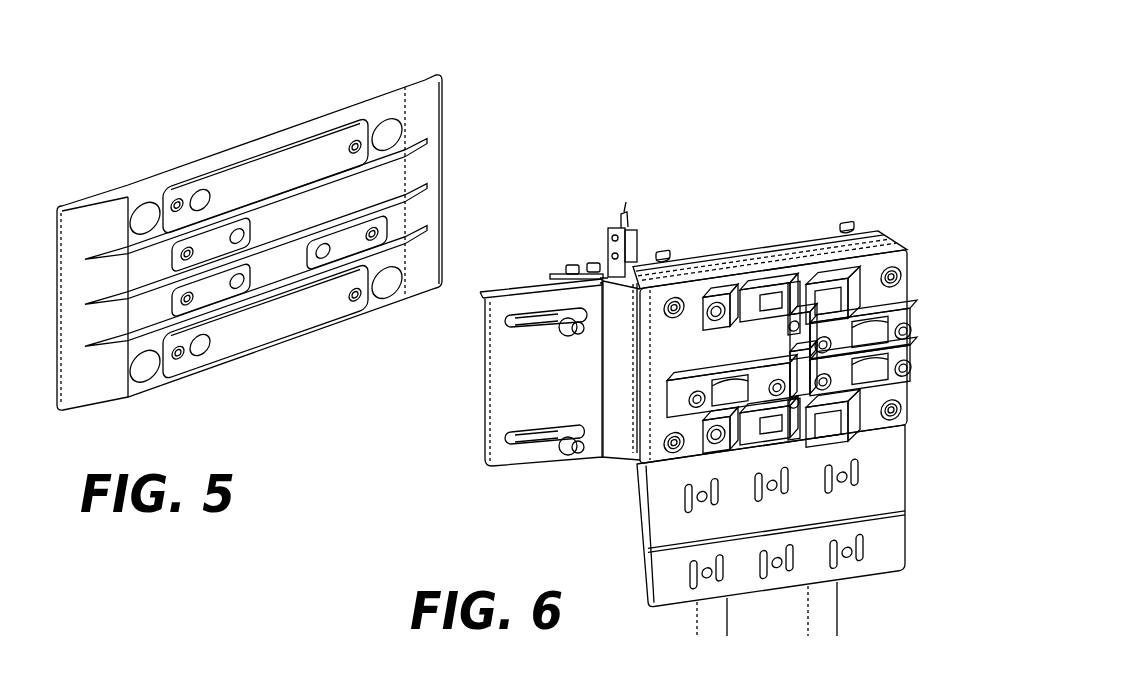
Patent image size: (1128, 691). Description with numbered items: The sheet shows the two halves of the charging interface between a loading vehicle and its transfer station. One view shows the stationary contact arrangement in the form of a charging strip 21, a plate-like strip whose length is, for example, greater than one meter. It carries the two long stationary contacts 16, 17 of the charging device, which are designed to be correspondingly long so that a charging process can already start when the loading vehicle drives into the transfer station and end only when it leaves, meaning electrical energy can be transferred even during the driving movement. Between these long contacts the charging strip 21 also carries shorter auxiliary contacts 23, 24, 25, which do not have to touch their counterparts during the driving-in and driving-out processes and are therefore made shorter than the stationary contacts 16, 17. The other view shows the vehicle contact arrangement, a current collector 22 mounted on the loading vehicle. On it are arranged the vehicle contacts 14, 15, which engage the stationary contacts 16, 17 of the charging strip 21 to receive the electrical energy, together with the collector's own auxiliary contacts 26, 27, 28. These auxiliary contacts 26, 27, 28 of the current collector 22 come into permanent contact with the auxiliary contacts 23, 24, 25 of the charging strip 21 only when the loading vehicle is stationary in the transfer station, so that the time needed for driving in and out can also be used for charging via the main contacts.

In FIG. 6, the vehicle contact 14 is at (806, 317).
In FIG. 6, the vehicle contact 15 is at (842, 428).
In FIG. 5, the stationary contact 16 is at (302, 157).
In FIG. 5, the stationary contact 17 is at (298, 320).
In FIG. 5, the charging strip 21 is at (212, 126).
In FIG. 6, the current collector 22 is at (706, 232).
In FIG. 5, the auxiliary contact 23 is at (217, 242).
In FIG. 5, the auxiliary contact 24 is at (210, 292).
In FIG. 5, the auxiliary contact 25 is at (372, 236).
In FIG. 6, the auxiliary contact 26 is at (870, 343).
In FIG. 6, the auxiliary contact 27 is at (867, 380).
In FIG. 6, the auxiliary contact 28 is at (722, 400).